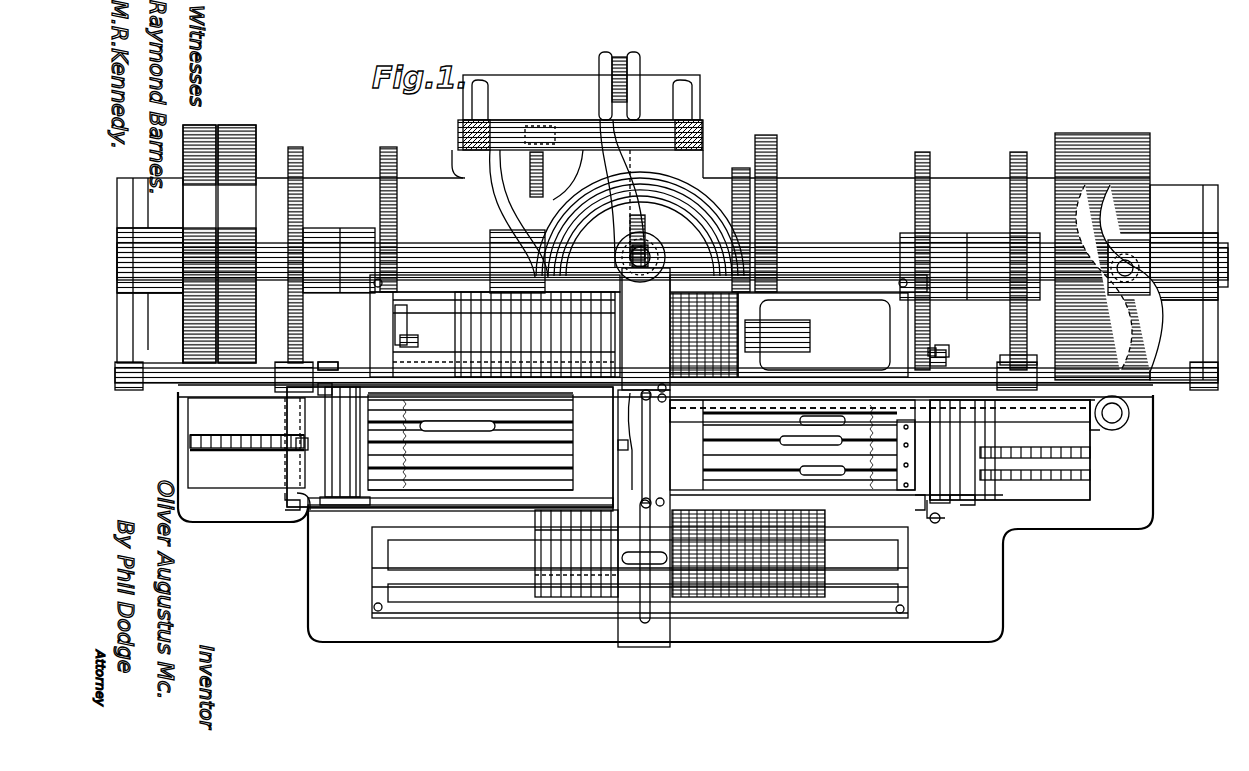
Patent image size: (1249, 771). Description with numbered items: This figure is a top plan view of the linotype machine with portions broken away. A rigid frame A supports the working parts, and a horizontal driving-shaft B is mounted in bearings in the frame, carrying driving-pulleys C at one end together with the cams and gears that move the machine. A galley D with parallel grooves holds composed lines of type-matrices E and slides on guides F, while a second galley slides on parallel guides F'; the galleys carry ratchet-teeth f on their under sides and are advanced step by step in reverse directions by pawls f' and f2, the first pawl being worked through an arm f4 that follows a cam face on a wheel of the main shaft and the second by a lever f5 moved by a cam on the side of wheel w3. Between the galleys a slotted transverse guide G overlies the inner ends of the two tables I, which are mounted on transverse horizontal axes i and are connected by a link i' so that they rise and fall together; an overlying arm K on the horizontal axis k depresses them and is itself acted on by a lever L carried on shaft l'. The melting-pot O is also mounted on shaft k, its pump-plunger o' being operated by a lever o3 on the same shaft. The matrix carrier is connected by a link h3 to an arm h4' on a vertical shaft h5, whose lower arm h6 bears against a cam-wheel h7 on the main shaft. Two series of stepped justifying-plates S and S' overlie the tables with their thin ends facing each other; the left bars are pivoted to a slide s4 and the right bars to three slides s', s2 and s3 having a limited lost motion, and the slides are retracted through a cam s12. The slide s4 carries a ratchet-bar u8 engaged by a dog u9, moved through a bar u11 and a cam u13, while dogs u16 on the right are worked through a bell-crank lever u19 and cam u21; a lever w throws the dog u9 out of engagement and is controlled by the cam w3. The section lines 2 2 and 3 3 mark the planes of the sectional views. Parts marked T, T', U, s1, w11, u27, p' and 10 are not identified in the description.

The rigid frame A is at (162, 208).
The horizontal driving-shaft B is at (113, 262).
The driving-pulleys C is at (183, 320).
The galley D is at (675, 290).
The type-matrices E is at (728, 598).
The guides or supports F is at (460, 564).
The guides F' is at (648, 326).
The transverse guide or holder G is at (644, 515).
The overlying arm K is at (627, 66).
The lever L is at (599, 108).
The melting-pot O is at (698, 183).
The pump-plunger o' is at (647, 252).
The lever o3 is at (640, 210).
The justifying-plates S is at (470, 461).
The justifying-plates S' is at (809, 479).
The carriage T is at (450, 457).
The table I is at (450, 447).
The carriage T' is at (836, 460).
The rack U is at (247, 443).
The horizontal axis k is at (458, 135).
The link h3 is at (650, 445).
The rod h4' is at (878, 420).
The vertical shaft h5 is at (1130, 413).
The arm h6 is at (1148, 345).
The cam-wheel h7 is at (1150, 188).
The transverse horizontal axis i is at (666, 440).
The link i' is at (329, 365).
The ratchet-teeth f is at (527, 467).
The pawl f' is at (922, 523).
The pawl f2 is at (428, 402).
The arm f4 is at (948, 364).
The lever f5 is at (425, 300).
The slide s1 is at (1095, 430).
The slide s' is at (1010, 450).
The central space-carrying slide s2 is at (1088, 455).
The slide s3 is at (930, 440).
The space-carrying slide s4 is at (266, 412).
The cam s12 is at (776, 222).
The ratchet-bar u8 is at (224, 447).
The dog u9 is at (300, 450).
The bar u11 is at (328, 366).
The collar w11 is at (300, 386).
The cam u13 is at (304, 210).
The dogs u16 is at (950, 504).
The bell-crank lever u19 is at (945, 360).
The cam u21 is at (930, 214).
The pivot u27 is at (940, 524).
The lever w is at (340, 499).
The cam w3 is at (398, 210).
The pinion p' is at (741, 221).
The shaft l' is at (1009, 357).
The bracket 10 is at (295, 506).
The section line 2 2 is at (1207, 452).
The section line 3 3 is at (647, 27).